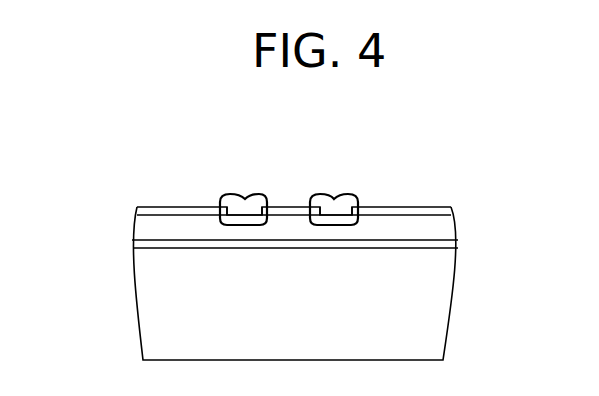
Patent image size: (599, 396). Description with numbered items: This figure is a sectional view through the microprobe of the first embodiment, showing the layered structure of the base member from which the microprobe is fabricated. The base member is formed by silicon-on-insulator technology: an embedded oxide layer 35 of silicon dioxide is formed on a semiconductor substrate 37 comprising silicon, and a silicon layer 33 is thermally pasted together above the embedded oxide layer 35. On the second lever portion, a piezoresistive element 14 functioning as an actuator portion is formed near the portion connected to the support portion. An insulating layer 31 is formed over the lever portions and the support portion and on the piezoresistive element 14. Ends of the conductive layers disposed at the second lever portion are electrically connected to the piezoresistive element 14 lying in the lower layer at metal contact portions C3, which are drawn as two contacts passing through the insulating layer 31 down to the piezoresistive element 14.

The insulating layer 31 is at (445, 212).
The silicon layer 33 is at (443, 230).
The embedded oxide layer 35 is at (449, 242).
The semiconductor substrate 37 is at (423, 325).
The piezoresistive element 14 is at (328, 220).
The metal contact portions C3 is at (247, 205).